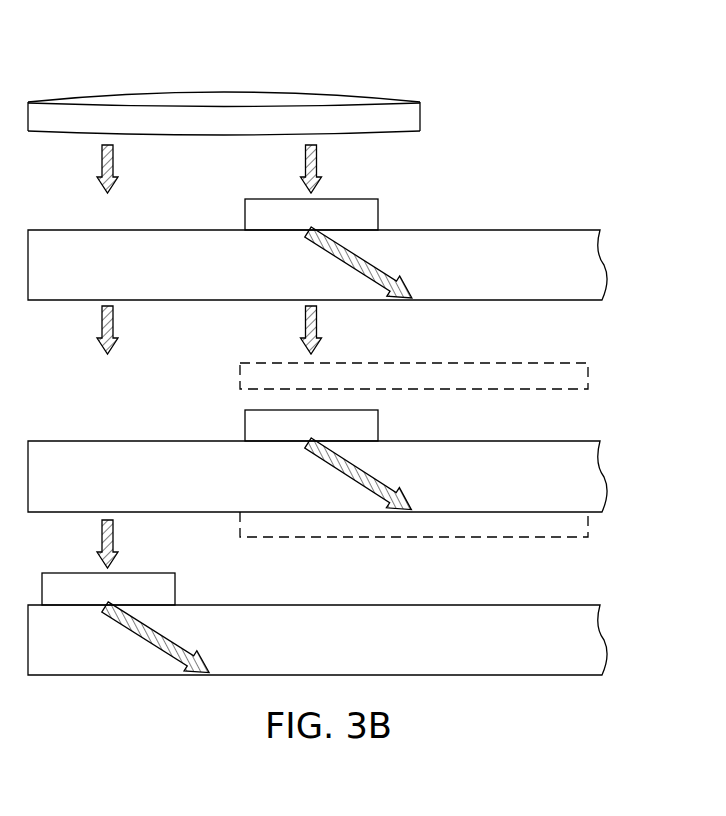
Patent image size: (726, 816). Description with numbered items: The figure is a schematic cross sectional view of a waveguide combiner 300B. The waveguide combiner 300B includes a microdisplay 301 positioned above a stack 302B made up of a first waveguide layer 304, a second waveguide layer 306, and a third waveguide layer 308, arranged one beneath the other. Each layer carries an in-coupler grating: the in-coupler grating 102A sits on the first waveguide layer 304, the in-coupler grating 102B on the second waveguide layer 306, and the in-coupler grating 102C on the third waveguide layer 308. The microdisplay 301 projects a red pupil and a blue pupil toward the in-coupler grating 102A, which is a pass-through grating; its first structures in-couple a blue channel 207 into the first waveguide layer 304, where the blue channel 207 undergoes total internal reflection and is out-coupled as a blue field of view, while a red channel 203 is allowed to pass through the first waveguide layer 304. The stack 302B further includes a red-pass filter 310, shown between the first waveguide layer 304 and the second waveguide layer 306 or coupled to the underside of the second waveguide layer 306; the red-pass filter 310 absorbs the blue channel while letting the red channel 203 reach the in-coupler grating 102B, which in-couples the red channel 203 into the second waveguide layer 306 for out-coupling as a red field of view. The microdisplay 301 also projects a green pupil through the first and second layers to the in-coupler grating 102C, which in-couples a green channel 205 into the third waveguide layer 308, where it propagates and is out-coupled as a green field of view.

The waveguide combiner 300B is at (547, 82).
The microdisplay 301 is at (420, 113).
The in-coupler grating 102A is at (368, 213).
The in-coupler grating 102B is at (368, 425).
The in-coupler grating 102C is at (166, 590).
The stack 302B is at (622, 675).
The first waveguide layer 304 is at (560, 281).
The second waveguide layer 306 is at (560, 492).
The third waveguide layer 308 is at (560, 656).
The blue channel 207 is at (382, 272).
The red channel 203 is at (382, 482).
The green channel 205 is at (182, 640).
The red-pass filter 310 is at (502, 378).